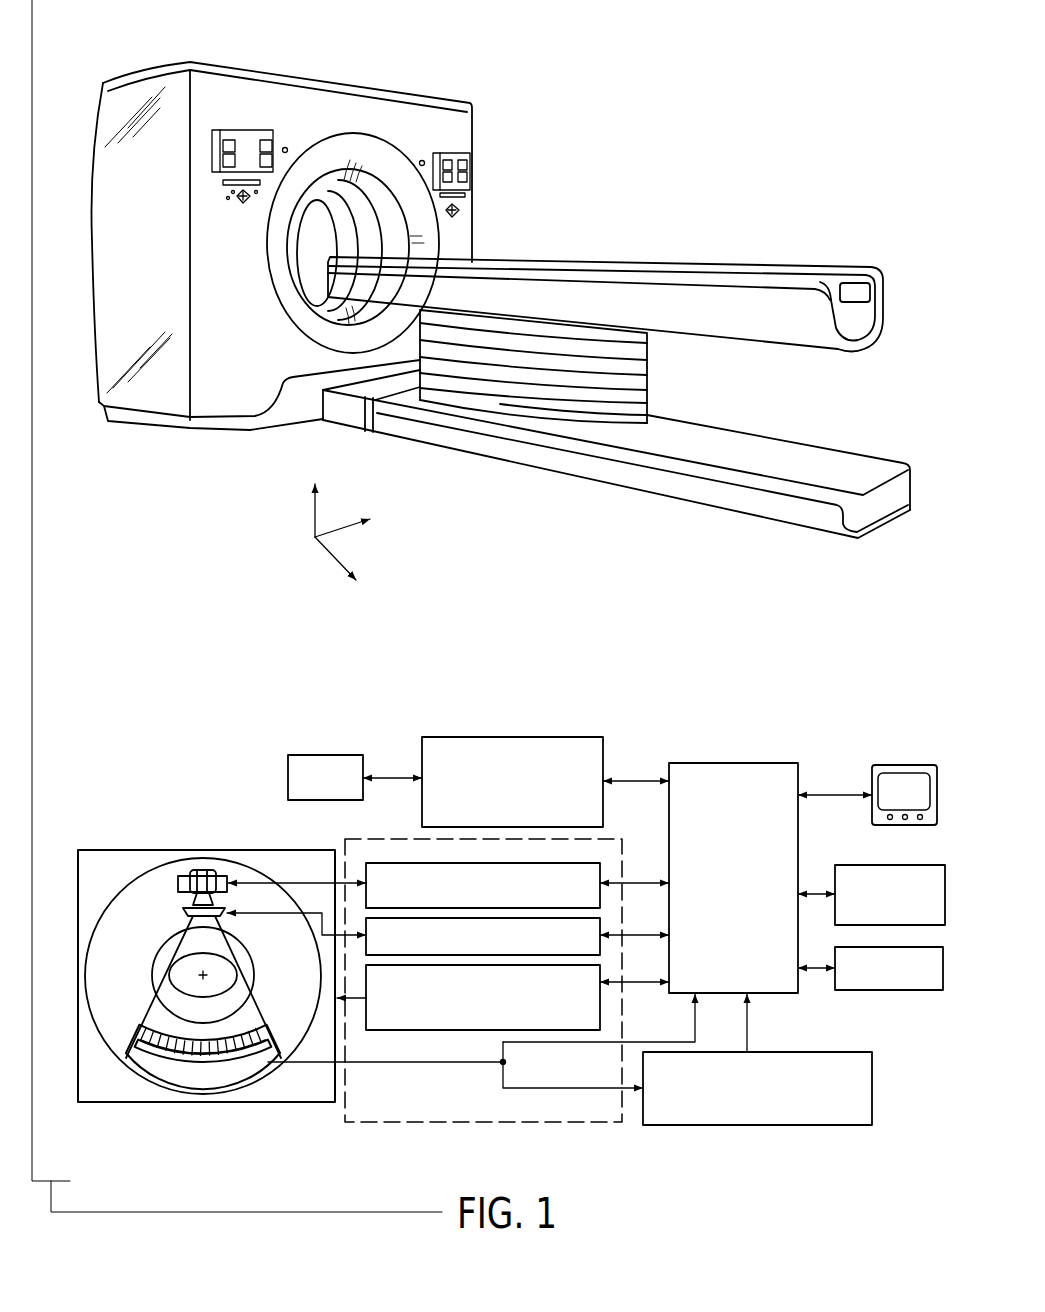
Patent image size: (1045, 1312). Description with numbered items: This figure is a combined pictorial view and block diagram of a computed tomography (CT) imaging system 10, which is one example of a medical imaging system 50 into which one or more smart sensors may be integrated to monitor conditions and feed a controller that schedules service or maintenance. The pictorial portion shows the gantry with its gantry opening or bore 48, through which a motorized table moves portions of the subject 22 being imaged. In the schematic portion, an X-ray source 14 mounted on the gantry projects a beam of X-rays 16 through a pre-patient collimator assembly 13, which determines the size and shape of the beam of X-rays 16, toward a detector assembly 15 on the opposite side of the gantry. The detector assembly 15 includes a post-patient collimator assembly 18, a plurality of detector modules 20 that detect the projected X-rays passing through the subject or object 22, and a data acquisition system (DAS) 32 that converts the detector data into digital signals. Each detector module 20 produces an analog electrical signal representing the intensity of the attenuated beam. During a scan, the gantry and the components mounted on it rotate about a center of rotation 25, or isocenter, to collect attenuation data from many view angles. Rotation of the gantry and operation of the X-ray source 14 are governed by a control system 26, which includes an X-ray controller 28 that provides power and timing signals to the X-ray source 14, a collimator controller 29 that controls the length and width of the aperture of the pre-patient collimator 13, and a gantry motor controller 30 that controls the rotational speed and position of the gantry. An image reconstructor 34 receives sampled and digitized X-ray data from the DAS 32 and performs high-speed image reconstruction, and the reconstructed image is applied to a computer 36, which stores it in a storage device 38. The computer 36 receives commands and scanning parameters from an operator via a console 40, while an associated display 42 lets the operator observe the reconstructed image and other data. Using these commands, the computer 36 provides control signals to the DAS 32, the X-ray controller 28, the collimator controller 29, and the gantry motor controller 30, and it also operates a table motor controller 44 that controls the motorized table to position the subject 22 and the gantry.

The computed tomography (CT) imaging system 10 is at (586, 88).
The pre-patient collimator assembly 13 is at (182, 911).
The X-ray source 14 is at (202, 870).
The detector assembly 15 is at (122, 1030).
The beam of X-rays 16 is at (141, 1021).
The collimator assembly 18 is at (266, 1022).
The detector modules 20 is at (232, 1062).
The subject or object 22 is at (160, 952).
The center of rotation 25 is at (208, 972).
The control system 26 is at (358, 1140).
The X-ray controller 28 is at (602, 865).
The collimator controller 29 is at (602, 921).
The gantry motor controller 30 is at (602, 998).
The data acquisition system (DAS) 32 is at (168, 1062).
The image reconstructor 34 is at (780, 1126).
The computer 36 is at (738, 763).
The storage device 38 is at (905, 992).
The console 40 is at (862, 865).
The display 42 is at (906, 765).
The table motor controller 44 is at (511, 737).
The gantry opening or bore 48 is at (297, 251).
The medical imaging system 50 is at (337, 190).